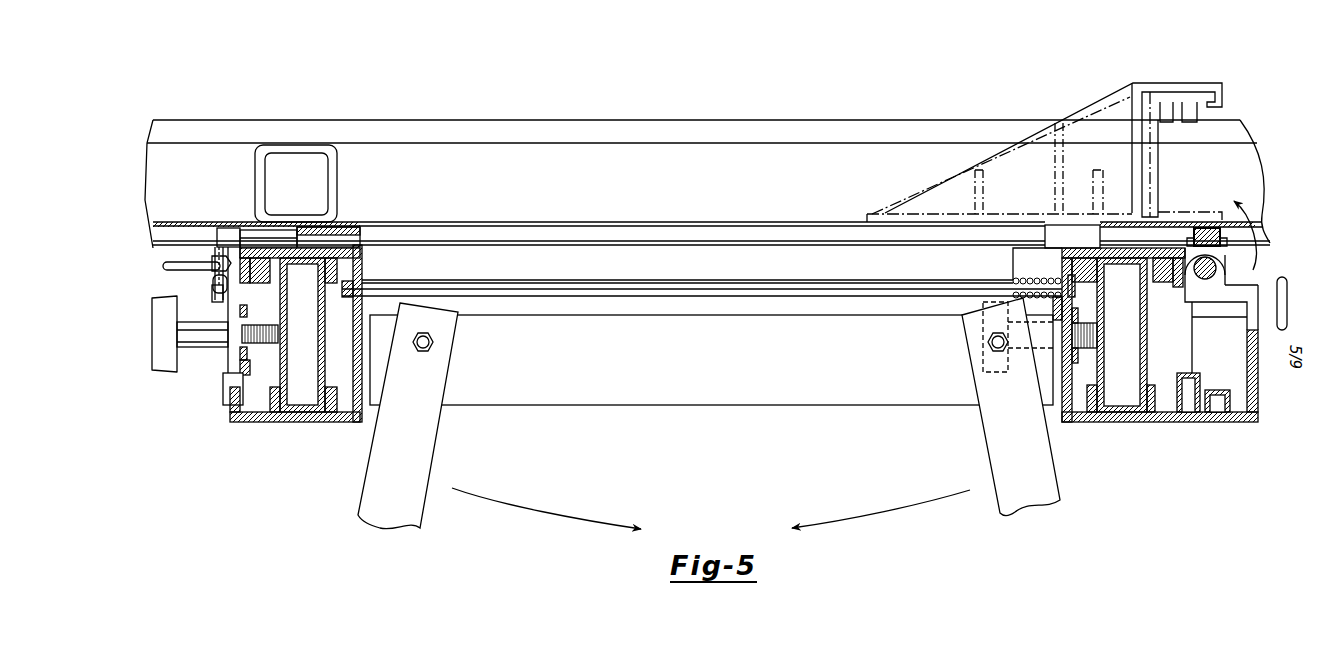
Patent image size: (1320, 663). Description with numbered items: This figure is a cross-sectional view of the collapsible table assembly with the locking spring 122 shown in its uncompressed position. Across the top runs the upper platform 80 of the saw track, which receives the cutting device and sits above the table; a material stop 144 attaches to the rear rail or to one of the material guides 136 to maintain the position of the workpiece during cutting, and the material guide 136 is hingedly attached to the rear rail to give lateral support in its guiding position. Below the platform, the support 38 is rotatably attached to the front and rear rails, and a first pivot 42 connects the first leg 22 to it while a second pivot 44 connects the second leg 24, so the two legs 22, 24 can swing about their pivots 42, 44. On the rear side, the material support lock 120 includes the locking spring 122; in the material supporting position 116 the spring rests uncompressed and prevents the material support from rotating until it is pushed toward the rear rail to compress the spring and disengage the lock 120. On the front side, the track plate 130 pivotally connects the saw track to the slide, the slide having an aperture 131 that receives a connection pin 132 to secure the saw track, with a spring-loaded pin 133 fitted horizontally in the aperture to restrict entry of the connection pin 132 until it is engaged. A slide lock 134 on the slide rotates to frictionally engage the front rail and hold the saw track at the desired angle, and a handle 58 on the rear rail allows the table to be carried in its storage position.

The upper platform 80 is at (380, 123).
The material stop 144 is at (1088, 108).
The material supporting position 116 is at (485, 238).
The spring-loaded pin 133 is at (173, 262).
The connection pin 132 is at (218, 233).
The track plate 130 is at (149, 253).
The aperture 131 is at (212, 284).
The slide lock 134 is at (163, 372).
The support 38 is at (687, 405).
The locking spring 122 is at (1013, 282).
The material support lock 120 is at (1036, 275).
The material guide 136 is at (1243, 422).
The handle 58 is at (1282, 275).
The first leg 22 is at (420, 463).
The first pivot 42 is at (432, 345).
The second leg 24 is at (1048, 480).
The second pivot 44 is at (990, 345).